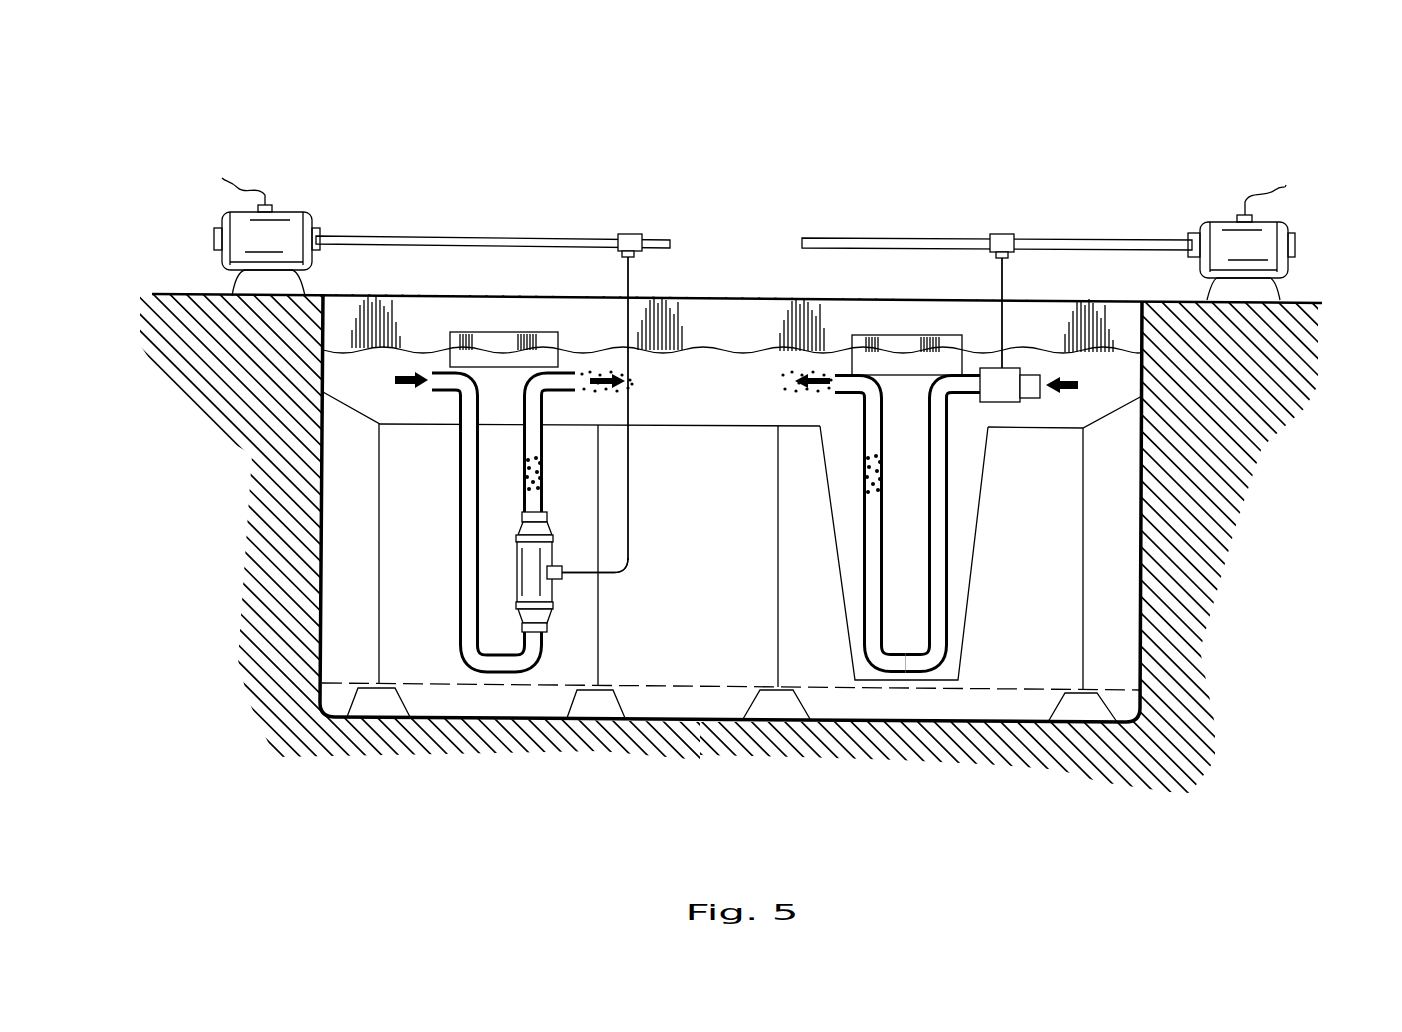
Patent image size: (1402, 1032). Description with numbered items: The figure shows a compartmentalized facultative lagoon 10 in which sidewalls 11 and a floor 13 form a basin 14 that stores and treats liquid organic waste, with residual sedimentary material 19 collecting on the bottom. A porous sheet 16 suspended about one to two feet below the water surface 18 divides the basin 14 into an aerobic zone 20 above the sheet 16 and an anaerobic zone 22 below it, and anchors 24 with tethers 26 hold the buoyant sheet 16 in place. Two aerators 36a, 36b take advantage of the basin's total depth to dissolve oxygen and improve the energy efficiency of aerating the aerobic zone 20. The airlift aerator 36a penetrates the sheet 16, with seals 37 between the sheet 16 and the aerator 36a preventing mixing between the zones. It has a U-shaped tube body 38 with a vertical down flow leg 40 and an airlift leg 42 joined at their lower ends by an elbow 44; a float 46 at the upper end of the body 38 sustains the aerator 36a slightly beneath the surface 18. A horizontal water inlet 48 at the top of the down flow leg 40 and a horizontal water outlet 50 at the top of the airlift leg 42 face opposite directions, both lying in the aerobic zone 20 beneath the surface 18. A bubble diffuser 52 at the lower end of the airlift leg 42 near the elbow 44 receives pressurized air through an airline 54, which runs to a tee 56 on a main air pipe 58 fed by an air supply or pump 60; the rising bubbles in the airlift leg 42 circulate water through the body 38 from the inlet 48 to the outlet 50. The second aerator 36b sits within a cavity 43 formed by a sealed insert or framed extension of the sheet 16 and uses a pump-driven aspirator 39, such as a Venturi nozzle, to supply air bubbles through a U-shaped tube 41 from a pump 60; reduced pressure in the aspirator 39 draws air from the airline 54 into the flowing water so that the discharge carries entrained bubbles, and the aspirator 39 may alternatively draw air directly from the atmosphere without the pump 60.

The compartmentalized facultative lagoon 10 is at (228, 580).
The sidewalls 11 is at (320, 598).
The floor 13 is at (519, 738).
The basin 14 is at (335, 517).
The sheet 16 is at (1142, 437).
The water surface 18 is at (722, 346).
The sedimentary material 19 is at (692, 697).
The aerobic zone 20 is at (1120, 386).
The anaerobic zone 22 is at (1110, 593).
The anchors 24 is at (1075, 713).
The tethers 26 is at (378, 633).
The aerator 36a is at (452, 563).
The aerator 36b is at (953, 532).
The seals 37 is at (459, 448).
The U-shaped tube body 38 is at (461, 508).
The pump-driven aspirator 39 is at (997, 378).
The down flow leg 40 is at (461, 545).
The U-shaped tube 41 is at (948, 630).
The airlift leg 42 is at (524, 490).
The cavity 43 is at (983, 490).
The elbow 44 is at (540, 649).
The float 46 is at (502, 332).
The water inlet 48 is at (442, 378).
The water outlet 50 is at (568, 377).
The bubble diffuser 52 is at (552, 537).
The airline 54 is at (638, 247).
The tee 56 is at (630, 233).
The main air pipe 58 is at (541, 238).
The pump 60 is at (268, 202).